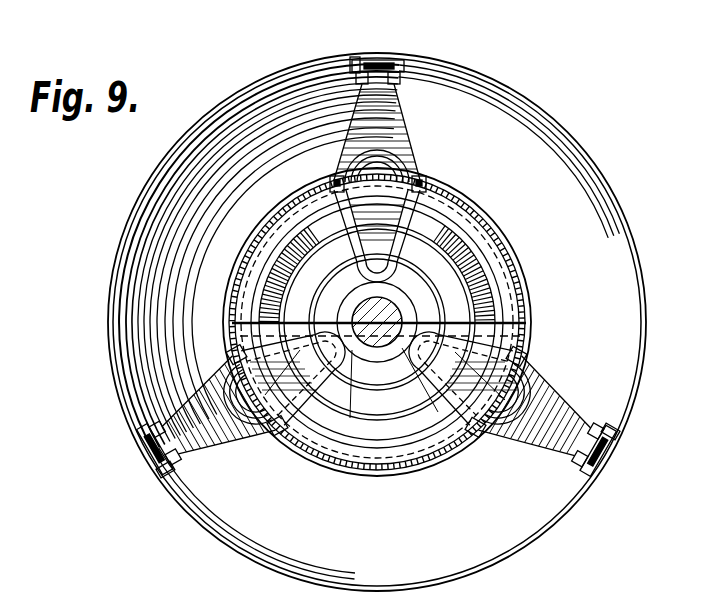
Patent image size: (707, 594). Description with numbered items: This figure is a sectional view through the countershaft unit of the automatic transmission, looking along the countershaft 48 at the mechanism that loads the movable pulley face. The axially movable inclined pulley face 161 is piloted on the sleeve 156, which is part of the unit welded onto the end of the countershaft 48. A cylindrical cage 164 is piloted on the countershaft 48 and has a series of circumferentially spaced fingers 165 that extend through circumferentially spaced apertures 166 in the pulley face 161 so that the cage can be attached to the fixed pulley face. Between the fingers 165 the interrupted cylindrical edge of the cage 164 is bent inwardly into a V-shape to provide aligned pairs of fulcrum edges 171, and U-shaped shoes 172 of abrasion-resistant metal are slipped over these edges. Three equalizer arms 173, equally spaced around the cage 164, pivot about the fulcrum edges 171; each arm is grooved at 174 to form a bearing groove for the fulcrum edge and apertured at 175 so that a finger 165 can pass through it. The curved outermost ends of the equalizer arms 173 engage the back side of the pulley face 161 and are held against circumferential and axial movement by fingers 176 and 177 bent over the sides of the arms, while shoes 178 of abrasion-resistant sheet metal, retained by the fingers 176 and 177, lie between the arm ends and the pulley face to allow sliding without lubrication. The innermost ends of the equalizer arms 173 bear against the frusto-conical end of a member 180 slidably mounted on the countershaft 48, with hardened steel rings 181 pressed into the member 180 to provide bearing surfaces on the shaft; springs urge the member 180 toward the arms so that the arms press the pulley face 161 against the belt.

The countershaft 48 is at (362, 398).
The sleeve 156 is at (432, 282).
The axially movable inclined pulley face 161 is at (515, 100).
The cylindrical cage 164 is at (482, 213).
The fingers 165 is at (372, 176).
The apertures 166 is at (250, 252).
The fulcrum edges 171 is at (284, 213).
The U-shaped shoes 172 is at (318, 182).
The equalizer arms 173 is at (352, 125).
The bearing grooves 174 is at (333, 174).
The apertures 175 is at (391, 163).
The fingers 176 is at (362, 62).
The fingers 177 is at (410, 70).
The shoes 178 is at (400, 70).
The member 180 is at (337, 293).
The hardened steel rings 181 is at (348, 270).